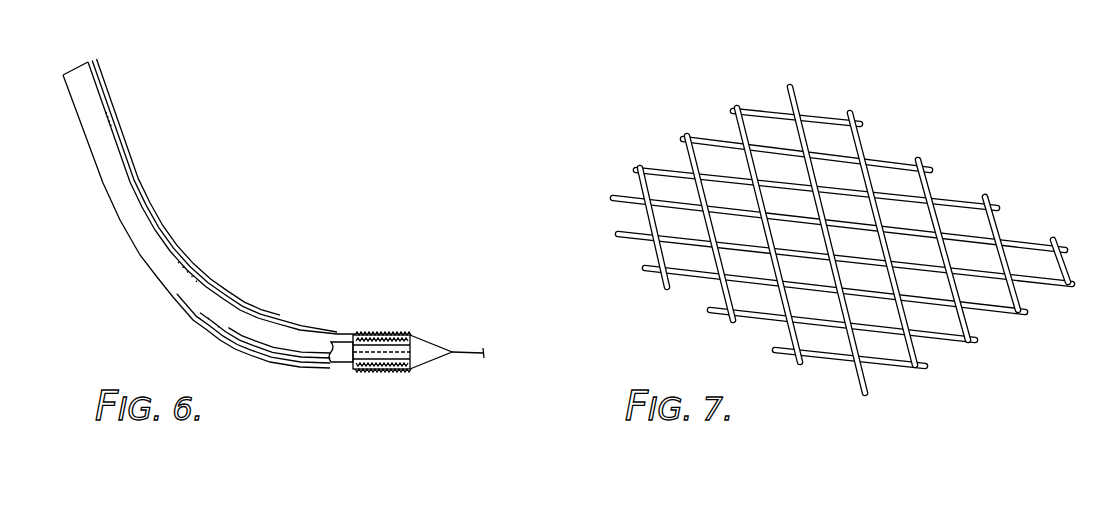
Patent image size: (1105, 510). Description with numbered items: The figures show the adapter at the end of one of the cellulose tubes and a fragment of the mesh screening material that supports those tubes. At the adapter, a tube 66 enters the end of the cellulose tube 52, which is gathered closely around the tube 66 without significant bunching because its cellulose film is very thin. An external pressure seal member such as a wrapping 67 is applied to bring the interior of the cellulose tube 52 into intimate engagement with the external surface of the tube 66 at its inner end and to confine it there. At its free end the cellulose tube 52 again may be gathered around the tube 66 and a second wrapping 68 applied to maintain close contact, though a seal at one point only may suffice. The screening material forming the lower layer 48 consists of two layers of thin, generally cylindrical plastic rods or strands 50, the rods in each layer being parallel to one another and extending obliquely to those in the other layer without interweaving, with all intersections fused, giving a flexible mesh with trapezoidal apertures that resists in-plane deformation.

In FIG. 7, the lower layer of mesh screening material 48 is at (858, 122).
In FIG. 7, the plastic rods or strands 50 is at (782, 322).
In FIG. 6, the cellulose tube 52 is at (470, 351).
In FIG. 6, the tube 66 is at (113, 130).
In FIG. 6, the wrapping 67 is at (366, 338).
In FIG. 6, the wrapping 68 is at (143, 187).